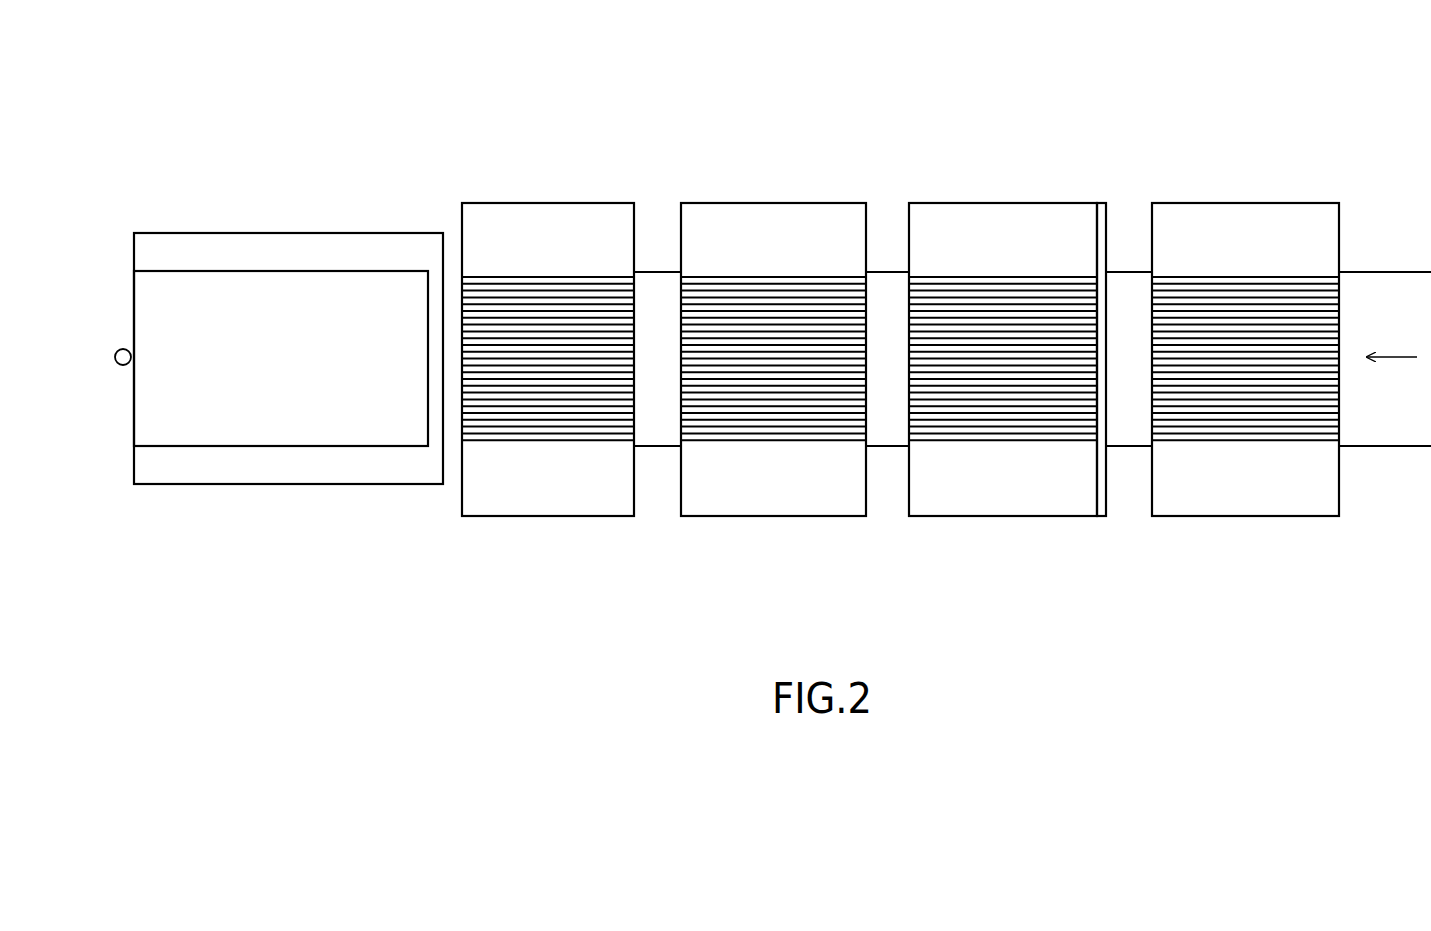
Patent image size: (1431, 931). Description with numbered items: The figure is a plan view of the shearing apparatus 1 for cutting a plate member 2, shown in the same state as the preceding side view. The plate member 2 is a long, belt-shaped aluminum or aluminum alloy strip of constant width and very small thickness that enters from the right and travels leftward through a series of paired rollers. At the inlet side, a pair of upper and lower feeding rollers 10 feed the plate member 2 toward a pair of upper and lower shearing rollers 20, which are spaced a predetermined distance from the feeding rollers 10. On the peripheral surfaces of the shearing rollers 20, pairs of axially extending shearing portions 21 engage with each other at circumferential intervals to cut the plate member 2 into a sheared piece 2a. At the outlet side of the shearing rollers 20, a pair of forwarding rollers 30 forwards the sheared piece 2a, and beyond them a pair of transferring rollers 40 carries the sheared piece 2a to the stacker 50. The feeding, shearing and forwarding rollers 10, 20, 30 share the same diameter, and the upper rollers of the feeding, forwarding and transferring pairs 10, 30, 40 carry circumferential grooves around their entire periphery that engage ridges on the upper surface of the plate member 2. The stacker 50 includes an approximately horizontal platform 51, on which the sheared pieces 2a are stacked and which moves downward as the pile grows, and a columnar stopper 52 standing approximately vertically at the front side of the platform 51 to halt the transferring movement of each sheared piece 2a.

The shearing apparatus 1 is at (850, 107).
The plate member 2 is at (1423, 435).
The sheared piece 2a is at (670, 440).
The feeding rollers 10 is at (1240, 202).
The shearing rollers 20 is at (982, 203).
The shearing portions 21 is at (1100, 423).
The forwarding rollers 30 is at (755, 203).
The transferring rollers 40 is at (538, 203).
The stacker 50 is at (272, 168).
The platform 51 is at (163, 470).
The stopper 52 is at (121, 352).